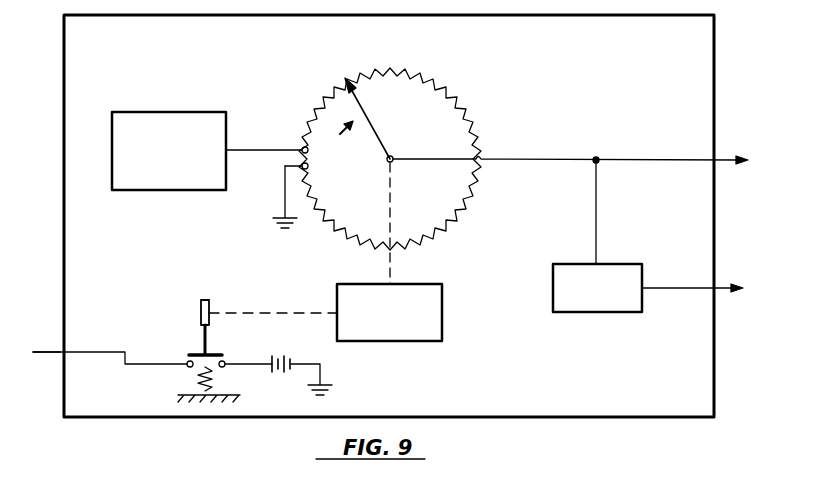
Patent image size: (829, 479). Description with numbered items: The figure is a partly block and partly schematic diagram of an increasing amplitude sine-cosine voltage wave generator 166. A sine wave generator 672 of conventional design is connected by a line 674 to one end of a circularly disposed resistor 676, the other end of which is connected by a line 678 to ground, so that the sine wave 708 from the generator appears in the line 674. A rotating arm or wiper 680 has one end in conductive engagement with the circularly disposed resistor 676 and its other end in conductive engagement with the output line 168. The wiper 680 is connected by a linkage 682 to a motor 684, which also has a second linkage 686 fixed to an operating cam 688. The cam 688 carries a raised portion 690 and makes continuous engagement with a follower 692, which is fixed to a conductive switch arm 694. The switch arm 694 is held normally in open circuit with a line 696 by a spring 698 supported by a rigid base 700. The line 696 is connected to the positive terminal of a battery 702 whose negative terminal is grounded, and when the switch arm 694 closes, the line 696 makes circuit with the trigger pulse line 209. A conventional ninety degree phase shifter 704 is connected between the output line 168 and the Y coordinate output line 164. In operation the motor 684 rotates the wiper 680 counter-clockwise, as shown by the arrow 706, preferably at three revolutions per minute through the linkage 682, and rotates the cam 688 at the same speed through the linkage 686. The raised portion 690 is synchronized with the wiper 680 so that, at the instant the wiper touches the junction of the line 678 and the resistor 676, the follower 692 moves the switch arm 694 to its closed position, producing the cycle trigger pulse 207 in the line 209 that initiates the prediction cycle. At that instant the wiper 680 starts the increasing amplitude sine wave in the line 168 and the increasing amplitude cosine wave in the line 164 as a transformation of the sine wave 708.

The increasing amplitude sine-cosine voltage wave generator 166 is at (603, 417).
The sine wave generator 672 is at (165, 112).
The sine wave 708 is at (260, 143).
The line 674 is at (263, 158).
The line 678 is at (284, 204).
The circularly disposed resistor 676 is at (442, 83).
The rotating arm or wiper 680 is at (374, 129).
The arrow 706 is at (361, 118).
The linkage 682 is at (391, 273).
The motor 684 is at (420, 341).
The second linkage 686 is at (260, 313).
The raised portion 690 is at (207, 300).
The operating cam 688 is at (200, 313).
The follower 692 is at (201, 335).
The conductive switch arm 694 is at (220, 352).
The trigger pulse line 209 is at (59, 356).
The cycle trigger pulse 207 is at (44, 351).
The spring 698 is at (198, 380).
The rigid base 700 is at (182, 398).
The line 696 is at (248, 366).
The battery 702 is at (283, 361).
The output line 168 is at (728, 160).
The 90° phase shifter 704 is at (593, 312).
The Y coordinate output line 164 is at (725, 288).